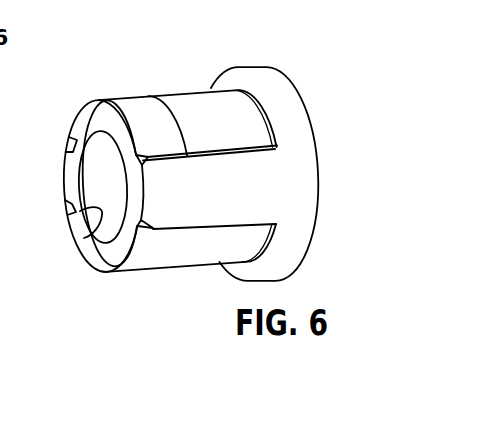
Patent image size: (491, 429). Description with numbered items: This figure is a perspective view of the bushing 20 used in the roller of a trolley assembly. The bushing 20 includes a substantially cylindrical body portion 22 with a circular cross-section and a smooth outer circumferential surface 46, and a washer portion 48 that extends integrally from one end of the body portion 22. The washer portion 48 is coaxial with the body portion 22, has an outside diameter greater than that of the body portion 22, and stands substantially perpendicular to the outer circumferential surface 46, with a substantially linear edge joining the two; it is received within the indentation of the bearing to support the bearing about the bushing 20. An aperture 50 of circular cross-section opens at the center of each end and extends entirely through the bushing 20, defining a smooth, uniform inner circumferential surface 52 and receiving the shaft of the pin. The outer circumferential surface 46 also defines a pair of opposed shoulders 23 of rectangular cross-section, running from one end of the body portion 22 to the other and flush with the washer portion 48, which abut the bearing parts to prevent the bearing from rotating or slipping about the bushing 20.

The bushing 20 is at (217, 179).
The body portion 22 is at (189, 80).
The shoulder 23 is at (148, 96).
The outer circumferential surface 46 is at (162, 268).
The washer portion 48 is at (297, 137).
The aperture 50 is at (83, 237).
The inner circumferential surface 52 is at (97, 174).